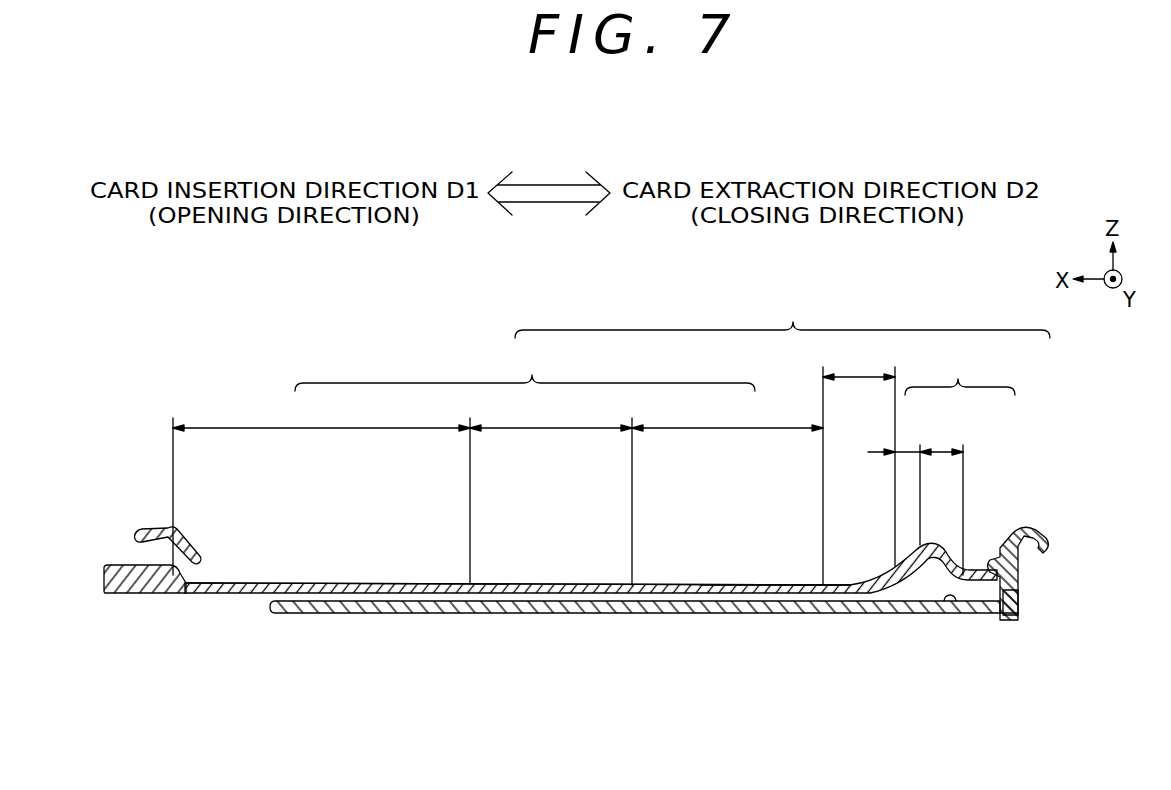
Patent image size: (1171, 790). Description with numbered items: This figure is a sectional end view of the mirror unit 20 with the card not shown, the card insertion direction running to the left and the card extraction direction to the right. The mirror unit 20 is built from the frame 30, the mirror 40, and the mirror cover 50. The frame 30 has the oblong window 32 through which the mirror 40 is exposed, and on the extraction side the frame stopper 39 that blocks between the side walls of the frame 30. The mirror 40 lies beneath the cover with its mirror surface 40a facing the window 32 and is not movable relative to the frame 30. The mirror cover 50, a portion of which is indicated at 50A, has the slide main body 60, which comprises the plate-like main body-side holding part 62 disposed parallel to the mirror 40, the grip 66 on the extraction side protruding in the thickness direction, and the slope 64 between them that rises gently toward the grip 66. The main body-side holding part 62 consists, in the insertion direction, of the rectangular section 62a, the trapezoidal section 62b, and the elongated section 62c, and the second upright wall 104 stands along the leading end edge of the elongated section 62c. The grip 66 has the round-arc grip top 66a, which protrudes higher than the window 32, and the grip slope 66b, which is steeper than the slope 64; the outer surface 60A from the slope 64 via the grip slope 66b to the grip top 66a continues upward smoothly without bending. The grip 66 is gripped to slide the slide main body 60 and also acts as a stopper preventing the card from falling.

The mirror unit 20 is at (1028, 486).
The frame 30 is at (1024, 567).
The window 32 is at (200, 560).
The frame stopper 39 is at (1003, 597).
The mirror 40 is at (865, 616).
The mirror surface 40a is at (957, 616).
The mirror cover 50 is at (420, 568).
The cover upper surface 50A is at (374, 568).
The slide main body 60 is at (782, 312).
The outer surface 60A is at (725, 583).
The main body-side holding part 62 is at (525, 365).
The rectangular section 62a is at (727, 476).
The trapezoidal section 62b is at (551, 489).
The elongated section 62c is at (321, 488).
The slope 64 is at (859, 454).
The grip 66 is at (978, 369).
The grip top 66a is at (943, 448).
The grip slope 66b is at (908, 448).
The second upright wall 104 is at (188, 595).